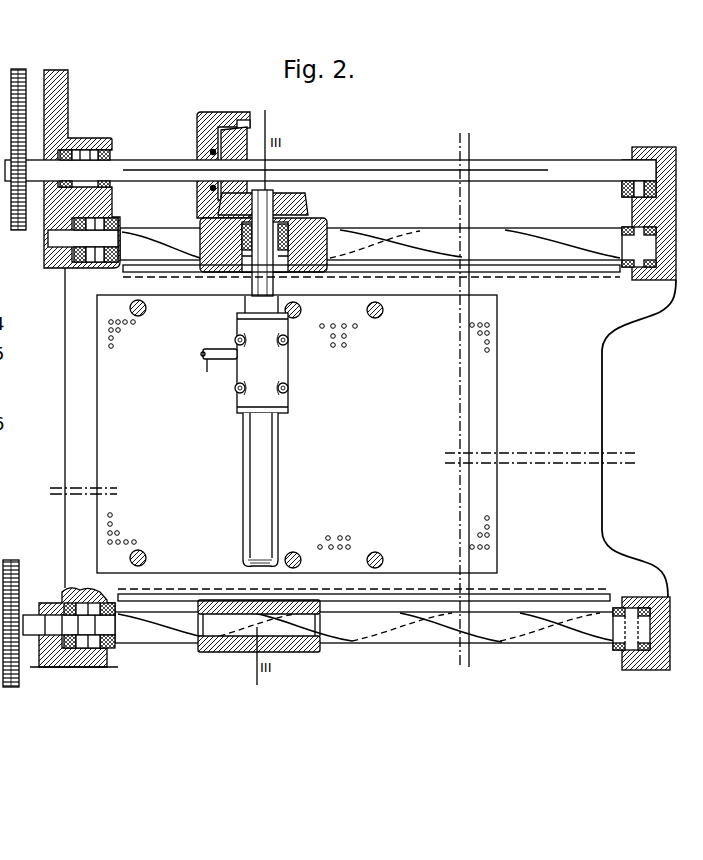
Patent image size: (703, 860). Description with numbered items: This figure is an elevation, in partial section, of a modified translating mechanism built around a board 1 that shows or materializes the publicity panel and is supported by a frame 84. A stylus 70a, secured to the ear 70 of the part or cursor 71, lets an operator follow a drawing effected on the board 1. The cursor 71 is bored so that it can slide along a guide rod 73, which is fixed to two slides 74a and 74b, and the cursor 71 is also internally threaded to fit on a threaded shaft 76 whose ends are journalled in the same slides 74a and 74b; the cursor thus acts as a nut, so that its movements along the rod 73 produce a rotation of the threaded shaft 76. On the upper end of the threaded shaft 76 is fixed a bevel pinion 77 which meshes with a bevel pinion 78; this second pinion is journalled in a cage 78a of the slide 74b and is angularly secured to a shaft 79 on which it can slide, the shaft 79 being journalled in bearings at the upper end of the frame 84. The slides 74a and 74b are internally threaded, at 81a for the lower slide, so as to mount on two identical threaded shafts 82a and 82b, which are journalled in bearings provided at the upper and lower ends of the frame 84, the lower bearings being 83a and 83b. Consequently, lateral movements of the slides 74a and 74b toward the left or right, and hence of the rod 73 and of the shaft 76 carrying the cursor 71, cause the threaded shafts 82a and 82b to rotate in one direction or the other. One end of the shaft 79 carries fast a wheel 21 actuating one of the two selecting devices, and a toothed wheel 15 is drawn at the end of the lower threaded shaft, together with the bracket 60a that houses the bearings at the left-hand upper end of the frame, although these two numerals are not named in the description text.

The board 1 is at (106, 441).
The gear 15 is at (13, 560).
The wheel 21 is at (22, 107).
The bearing bracket 60a is at (72, 204).
The ear 70 is at (210, 379).
The stylus 70a is at (201, 354).
The cursor 71 is at (268, 368).
The rod 73 is at (258, 460).
The slide 74a is at (212, 652).
The slide 74b is at (328, 228).
The threaded shaft 76 is at (279, 512).
The bevel pinion 77 is at (284, 191).
The bevel pinion 78 is at (252, 135).
The cage 78a is at (212, 151).
The shaft 79 is at (320, 167).
The internal thread 81a is at (303, 652).
The threaded shaft 82a is at (138, 640).
The threaded shaft 82b is at (424, 236).
The bearing 83a is at (72, 656).
The bearing 83b is at (633, 655).
The frame 84 is at (676, 212).